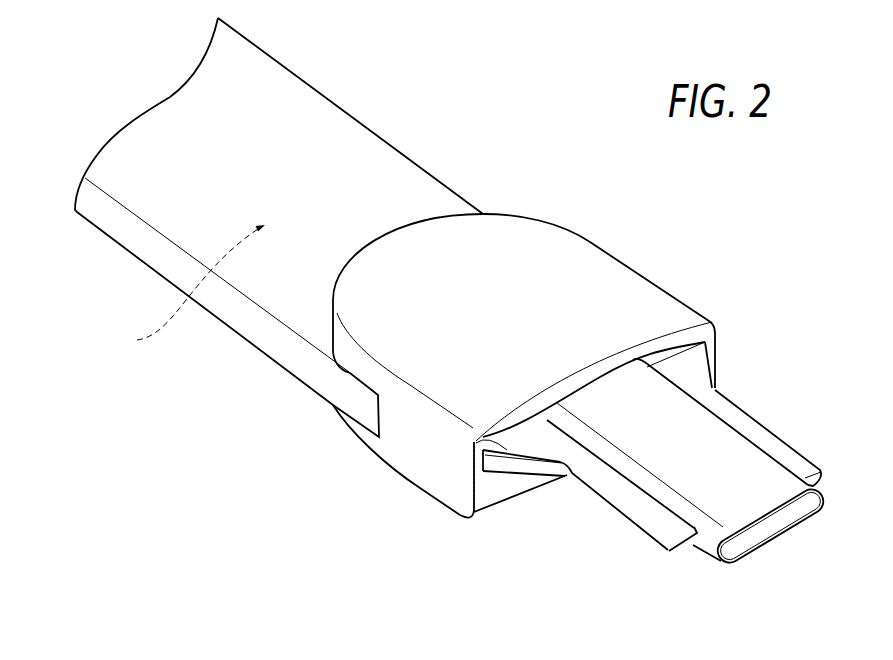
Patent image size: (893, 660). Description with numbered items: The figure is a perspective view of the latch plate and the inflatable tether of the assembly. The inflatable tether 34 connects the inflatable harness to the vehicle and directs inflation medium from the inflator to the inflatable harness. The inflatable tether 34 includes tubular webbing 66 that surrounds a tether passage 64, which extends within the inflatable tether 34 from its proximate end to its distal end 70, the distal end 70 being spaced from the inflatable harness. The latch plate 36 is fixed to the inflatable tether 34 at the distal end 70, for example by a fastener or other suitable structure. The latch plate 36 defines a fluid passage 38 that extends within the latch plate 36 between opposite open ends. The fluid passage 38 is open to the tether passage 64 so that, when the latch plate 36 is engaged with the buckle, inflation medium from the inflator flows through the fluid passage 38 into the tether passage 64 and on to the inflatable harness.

The inflatable tether 34 is at (217, 185).
The latch plate 36 is at (483, 468).
The fluid passage 38 is at (762, 525).
The tether passage 64 is at (185, 290).
The tubular webbing 66 is at (290, 80).
The distal end 70 is at (457, 194).